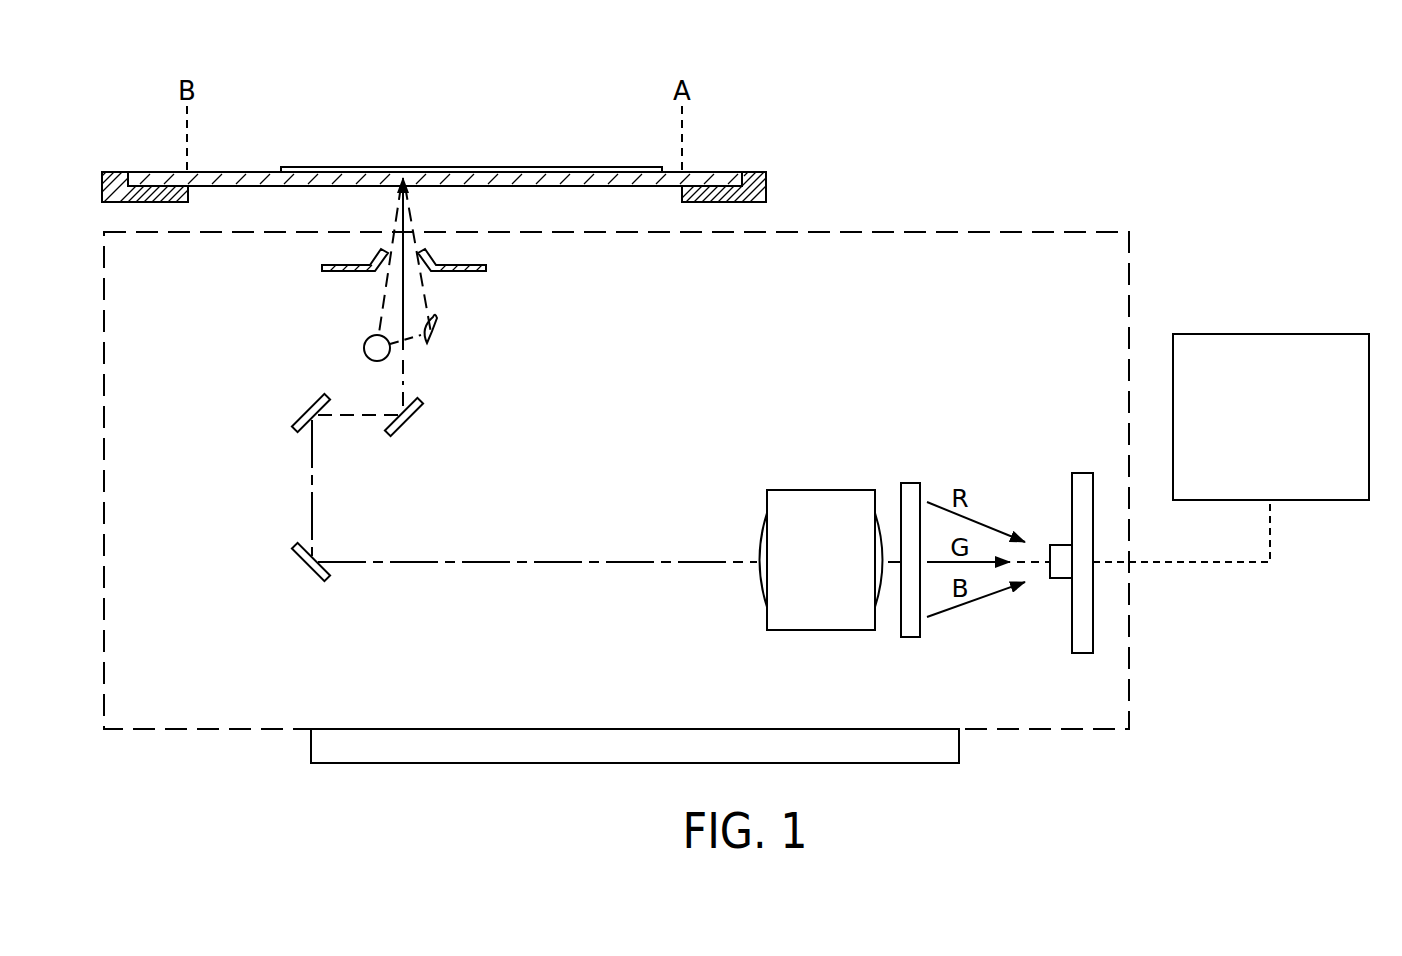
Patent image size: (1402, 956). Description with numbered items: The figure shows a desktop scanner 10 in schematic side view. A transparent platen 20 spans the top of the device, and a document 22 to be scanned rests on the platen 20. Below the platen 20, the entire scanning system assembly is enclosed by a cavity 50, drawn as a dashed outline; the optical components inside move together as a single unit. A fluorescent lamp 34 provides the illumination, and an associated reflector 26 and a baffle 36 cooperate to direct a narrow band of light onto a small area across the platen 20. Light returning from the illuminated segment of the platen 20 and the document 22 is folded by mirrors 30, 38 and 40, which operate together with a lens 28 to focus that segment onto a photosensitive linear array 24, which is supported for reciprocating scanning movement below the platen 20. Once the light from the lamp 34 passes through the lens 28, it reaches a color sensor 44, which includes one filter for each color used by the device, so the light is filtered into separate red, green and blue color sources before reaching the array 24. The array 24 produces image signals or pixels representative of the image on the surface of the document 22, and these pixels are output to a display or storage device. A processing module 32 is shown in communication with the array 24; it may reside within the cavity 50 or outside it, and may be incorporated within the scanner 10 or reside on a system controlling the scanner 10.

The desktop scanner 10 is at (1123, 123).
The transparent platen 20 is at (244, 171).
The document 22 is at (430, 166).
The photosensitive linear array 24 is at (1062, 574).
The reflector 26 is at (437, 340).
The lens 28 is at (825, 491).
The mirror 30 is at (310, 406).
The processing module 32 is at (1265, 333).
The fluorescent lamp 34 is at (365, 341).
The baffle 36 is at (478, 272).
The mirror 38 is at (406, 426).
The mirror 40 is at (306, 568).
The color sensor 44 is at (910, 639).
The cavity 50 is at (982, 231).